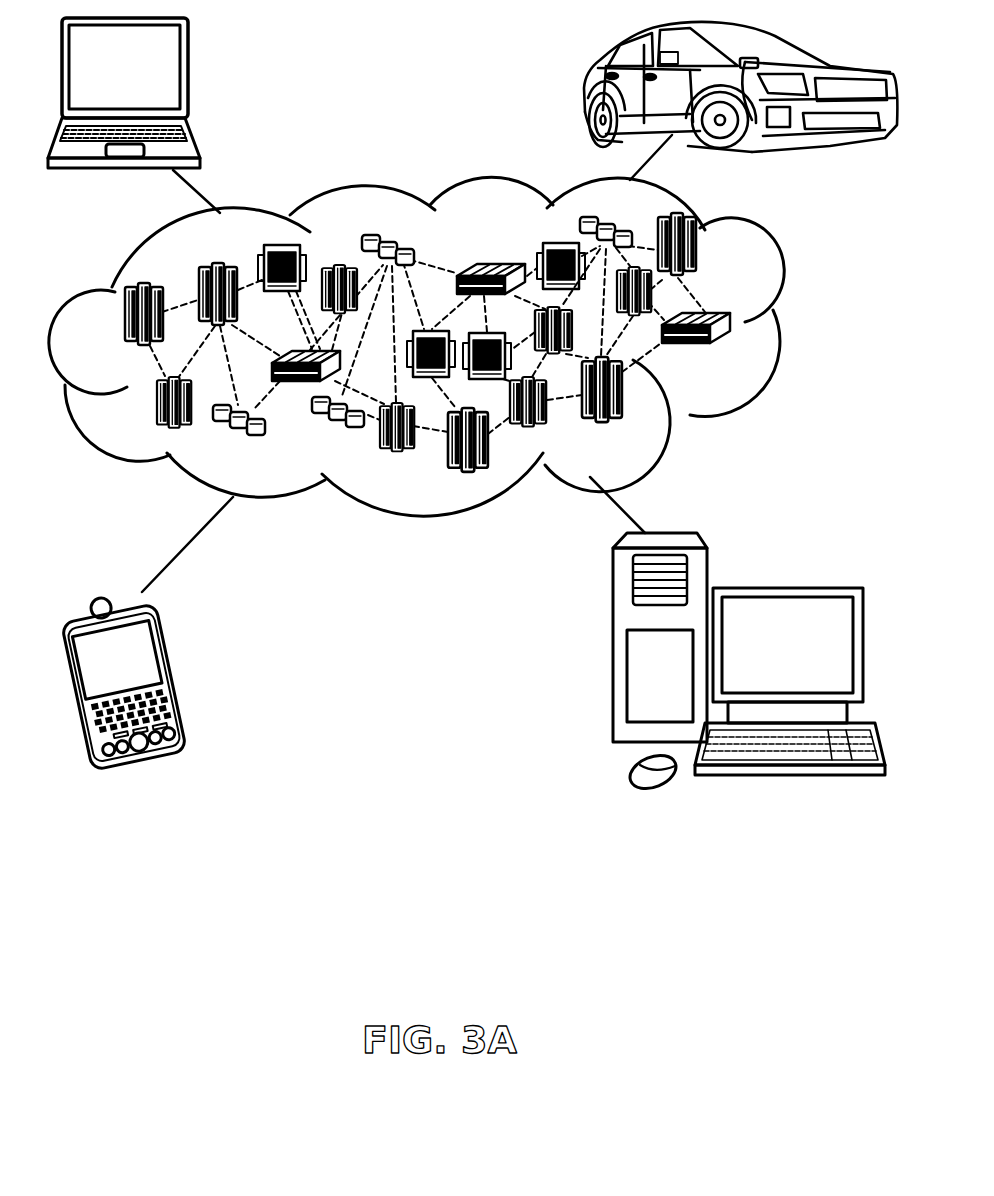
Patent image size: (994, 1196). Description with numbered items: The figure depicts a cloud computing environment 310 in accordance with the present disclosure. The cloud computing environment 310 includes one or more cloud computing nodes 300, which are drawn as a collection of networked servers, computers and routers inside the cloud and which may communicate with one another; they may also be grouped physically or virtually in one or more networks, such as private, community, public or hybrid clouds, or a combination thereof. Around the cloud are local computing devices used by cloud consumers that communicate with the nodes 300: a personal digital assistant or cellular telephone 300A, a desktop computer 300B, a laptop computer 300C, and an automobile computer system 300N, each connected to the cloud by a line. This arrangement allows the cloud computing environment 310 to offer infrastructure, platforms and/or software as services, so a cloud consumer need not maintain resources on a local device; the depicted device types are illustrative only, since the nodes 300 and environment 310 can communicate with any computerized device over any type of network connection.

The cloud computing nodes 300 is at (740, 354).
The cloud computing environment 310 is at (785, 323).
The personal digital assistant (PDA) or cellular telephone 300A is at (177, 677).
The desktop computer 300B is at (785, 588).
The laptop computer 300C is at (188, 72).
The automobile computer system 300N is at (587, 93).